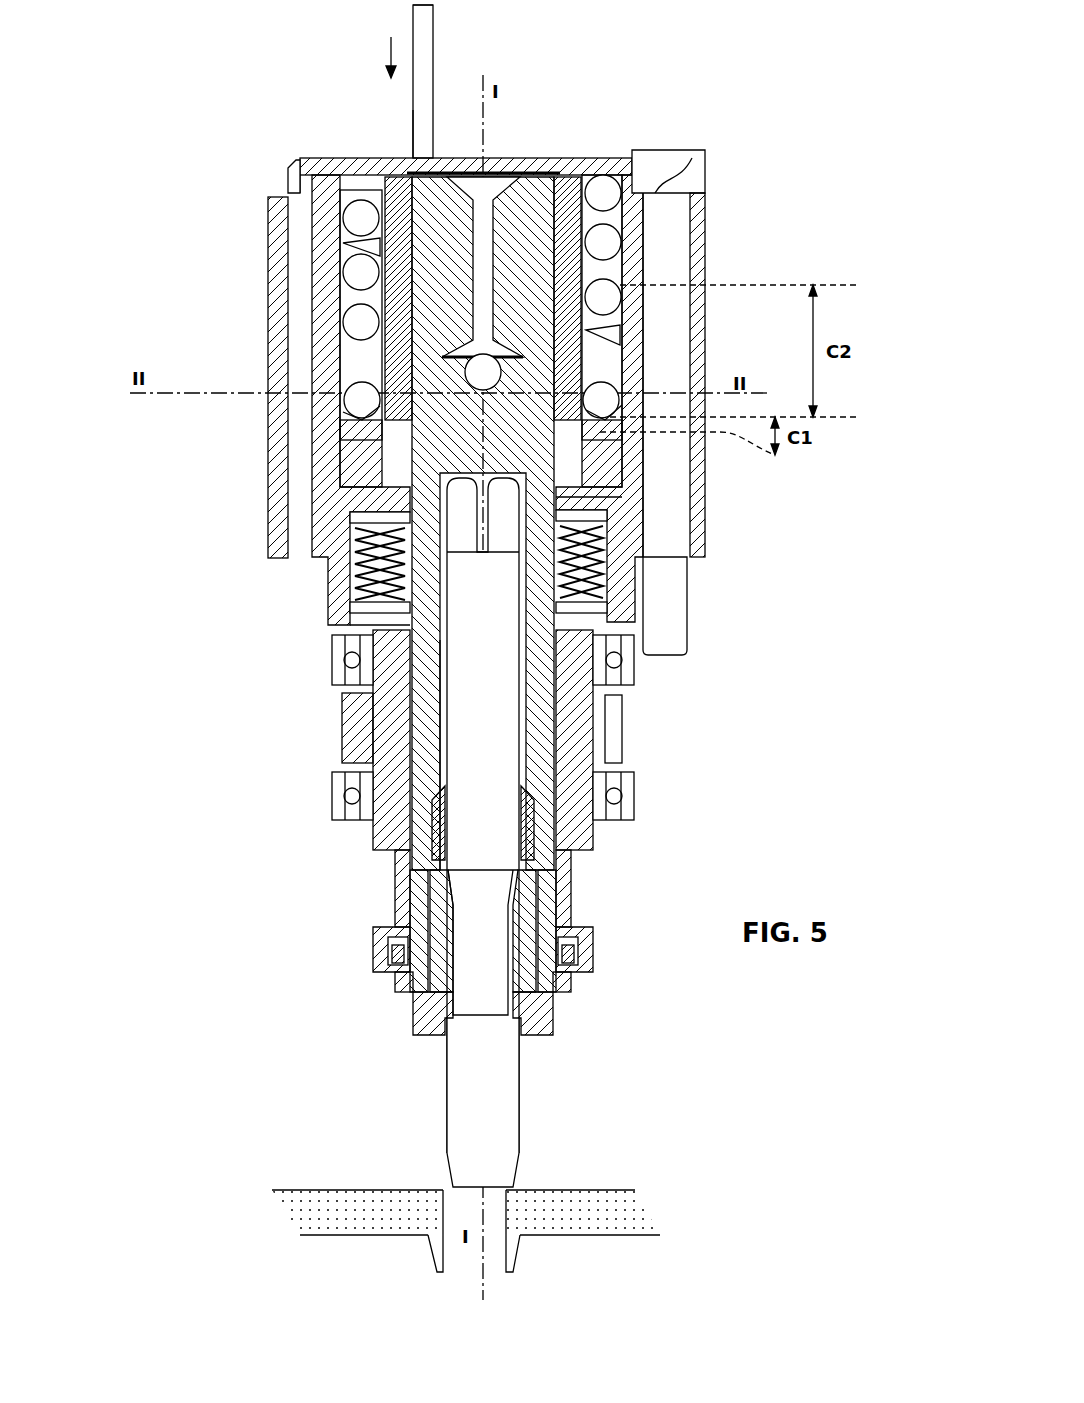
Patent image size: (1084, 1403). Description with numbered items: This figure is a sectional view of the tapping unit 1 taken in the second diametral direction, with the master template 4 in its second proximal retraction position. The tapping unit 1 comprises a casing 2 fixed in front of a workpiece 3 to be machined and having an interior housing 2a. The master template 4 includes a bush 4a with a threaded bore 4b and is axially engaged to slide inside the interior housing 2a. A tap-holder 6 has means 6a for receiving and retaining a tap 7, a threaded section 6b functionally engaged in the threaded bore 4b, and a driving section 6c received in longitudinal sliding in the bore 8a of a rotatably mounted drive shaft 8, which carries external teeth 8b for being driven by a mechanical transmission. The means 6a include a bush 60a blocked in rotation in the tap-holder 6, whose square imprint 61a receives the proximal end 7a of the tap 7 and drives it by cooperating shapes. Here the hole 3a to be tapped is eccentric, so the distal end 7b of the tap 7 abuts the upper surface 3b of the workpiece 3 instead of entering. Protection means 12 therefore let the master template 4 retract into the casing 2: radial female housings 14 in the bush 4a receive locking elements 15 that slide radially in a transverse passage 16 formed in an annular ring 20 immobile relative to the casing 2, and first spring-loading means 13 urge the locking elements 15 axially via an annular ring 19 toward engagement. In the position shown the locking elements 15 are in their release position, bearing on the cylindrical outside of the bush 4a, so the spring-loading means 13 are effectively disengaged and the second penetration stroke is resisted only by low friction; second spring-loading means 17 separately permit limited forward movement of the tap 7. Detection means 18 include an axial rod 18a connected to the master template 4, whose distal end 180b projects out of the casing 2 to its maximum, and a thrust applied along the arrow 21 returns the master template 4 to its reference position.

The tapping unit 1 is at (728, 641).
The casing 2 is at (707, 217).
The interior housing 2a is at (658, 243).
The workpiece 3 is at (648, 1200).
The hole to be tapped 3a is at (455, 1258).
The upper surface 3b is at (572, 1188).
The master template 4 is at (310, 320).
The bush 4a is at (345, 212).
The threaded bore 4b is at (617, 325).
The tap-holder 6 is at (413, 457).
The means for receiving and retaining the tap 6a is at (368, 362).
The threaded section 6b is at (387, 193).
The driving section 6c is at (427, 705).
The tap 7 is at (458, 744).
The proximal end 7a is at (462, 495).
The distal end 7b is at (457, 1125).
The drive shaft 8 is at (603, 839).
The bore 8a is at (392, 858).
The external teeth 8b is at (620, 725).
The protection means 12 is at (318, 407).
The first spring-loading means 13 is at (690, 157).
The radial female housings 14 is at (337, 258).
The locking elements 15 is at (620, 378).
The transverse passage 16 is at (345, 428).
The second spring-loading means 17 is at (355, 576).
The detection means 18 is at (438, 104).
The axial rod 18a is at (413, 108).
The distal end of the axial rod 180b is at (413, 25).
The annular ring 19 is at (600, 360).
The annular ring 20 is at (610, 468).
The arrow 21 is at (385, 53).
The bush 60a is at (495, 395).
The imprint 61a is at (600, 497).